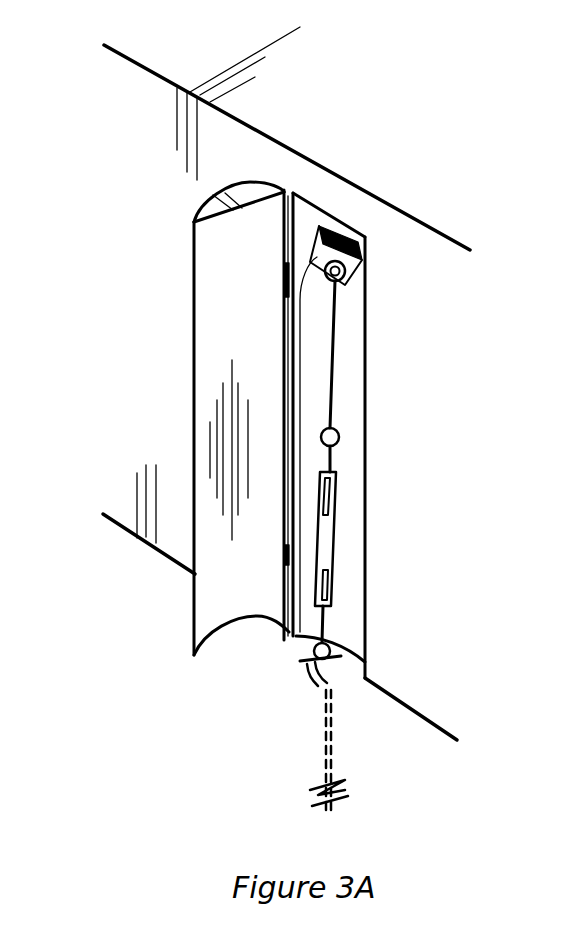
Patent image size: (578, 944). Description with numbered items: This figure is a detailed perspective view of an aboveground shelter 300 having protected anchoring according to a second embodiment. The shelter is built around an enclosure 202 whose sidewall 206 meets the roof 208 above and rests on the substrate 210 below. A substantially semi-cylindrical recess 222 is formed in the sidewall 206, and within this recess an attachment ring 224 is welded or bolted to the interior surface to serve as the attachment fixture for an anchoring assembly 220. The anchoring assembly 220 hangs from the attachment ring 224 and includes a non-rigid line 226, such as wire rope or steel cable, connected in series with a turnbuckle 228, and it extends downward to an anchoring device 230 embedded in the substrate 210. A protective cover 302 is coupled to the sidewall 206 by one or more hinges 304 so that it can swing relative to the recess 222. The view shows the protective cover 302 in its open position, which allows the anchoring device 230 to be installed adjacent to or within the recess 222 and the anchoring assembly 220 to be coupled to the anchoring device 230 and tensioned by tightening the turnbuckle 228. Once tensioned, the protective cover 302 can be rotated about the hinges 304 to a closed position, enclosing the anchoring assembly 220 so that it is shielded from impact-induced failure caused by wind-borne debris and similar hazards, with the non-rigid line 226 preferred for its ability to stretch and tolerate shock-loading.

The aboveground shelter 300 is at (468, 80).
The enclosure 202 is at (412, 216).
The roof 208 is at (340, 118).
The substrate 210 is at (120, 603).
The sidewall 206 is at (163, 246).
The protective cover 302 is at (184, 418).
The hinge 304 is at (283, 279).
The anchoring assembly 220 is at (300, 380).
The attachment ring 224 is at (326, 233).
The non-rigid line 226 is at (333, 360).
The turnbuckle 228 is at (333, 548).
The recess 222 is at (350, 596).
The anchoring device 230 is at (323, 720).